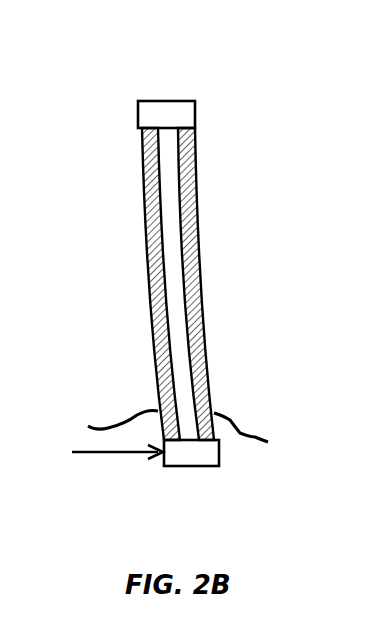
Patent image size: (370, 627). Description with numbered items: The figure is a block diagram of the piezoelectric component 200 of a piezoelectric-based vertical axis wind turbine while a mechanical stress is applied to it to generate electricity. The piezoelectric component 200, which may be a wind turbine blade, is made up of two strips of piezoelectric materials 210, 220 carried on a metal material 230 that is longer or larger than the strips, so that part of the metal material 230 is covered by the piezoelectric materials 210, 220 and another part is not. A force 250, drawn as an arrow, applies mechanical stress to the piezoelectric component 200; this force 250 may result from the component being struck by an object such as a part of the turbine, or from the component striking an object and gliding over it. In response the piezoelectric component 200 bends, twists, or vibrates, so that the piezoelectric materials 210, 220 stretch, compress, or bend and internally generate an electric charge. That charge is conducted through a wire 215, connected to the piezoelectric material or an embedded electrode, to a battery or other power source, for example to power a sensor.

The piezoelectric component 200 is at (152, 101).
The piezoelectric material 210 is at (200, 258).
The piezoelectric material 220 is at (147, 258).
The metal material 230 is at (184, 467).
The wire 215 is at (93, 423).
The force 250 is at (112, 455).